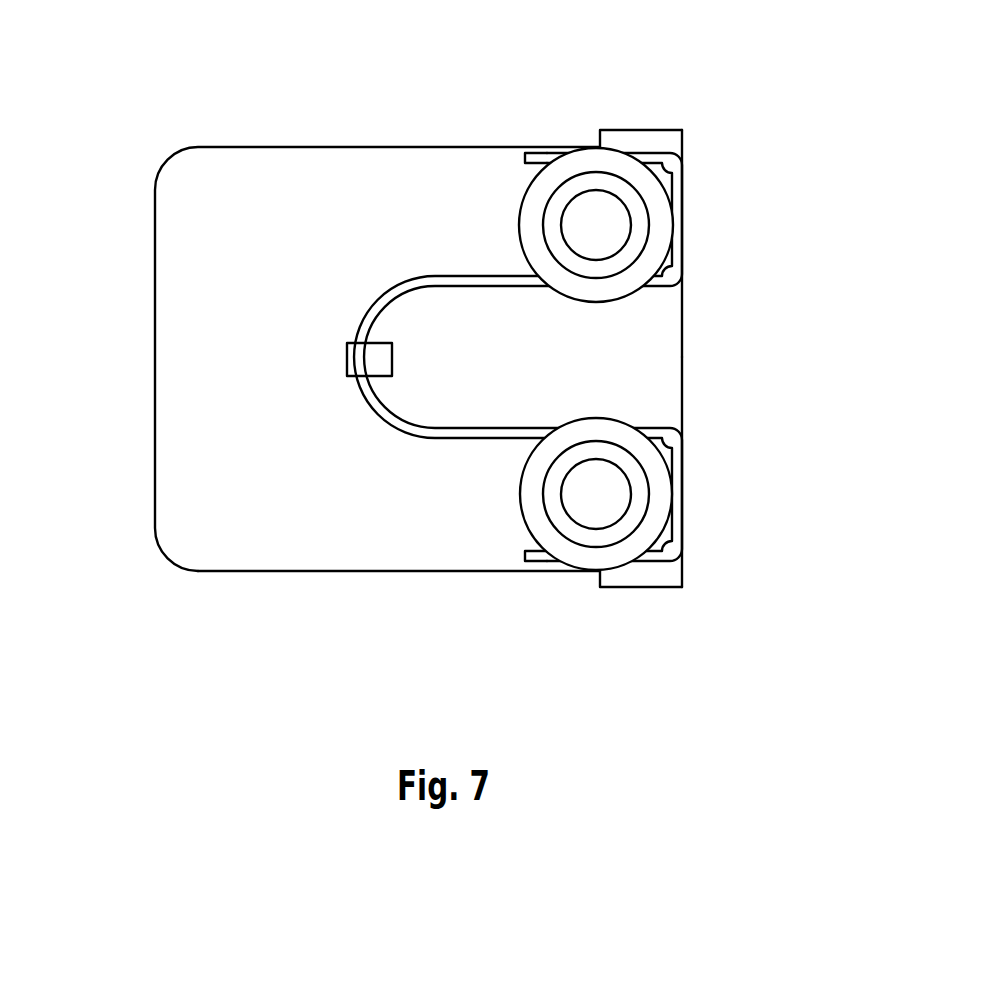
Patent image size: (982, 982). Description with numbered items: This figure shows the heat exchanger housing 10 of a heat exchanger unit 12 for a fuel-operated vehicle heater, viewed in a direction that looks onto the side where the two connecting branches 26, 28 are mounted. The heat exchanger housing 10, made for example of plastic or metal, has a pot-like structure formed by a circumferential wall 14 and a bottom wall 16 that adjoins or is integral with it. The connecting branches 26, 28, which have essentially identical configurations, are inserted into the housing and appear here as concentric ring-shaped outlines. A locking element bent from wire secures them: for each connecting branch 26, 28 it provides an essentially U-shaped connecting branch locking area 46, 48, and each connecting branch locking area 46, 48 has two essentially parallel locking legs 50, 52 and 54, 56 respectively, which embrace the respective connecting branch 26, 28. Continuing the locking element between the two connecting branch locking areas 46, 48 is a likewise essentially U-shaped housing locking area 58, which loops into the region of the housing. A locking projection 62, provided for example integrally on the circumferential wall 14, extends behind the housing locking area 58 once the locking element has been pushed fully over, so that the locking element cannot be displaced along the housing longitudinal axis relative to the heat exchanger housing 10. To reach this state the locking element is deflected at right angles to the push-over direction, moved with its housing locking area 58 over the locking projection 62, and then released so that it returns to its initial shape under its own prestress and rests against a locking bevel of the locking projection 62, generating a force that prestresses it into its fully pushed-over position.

The heat exchanger housing 10 is at (318, 355).
The heat exchanger unit 12 is at (718, 296).
The circumferential wall 14 is at (348, 572).
The bottom wall 16 is at (155, 345).
The connecting branch 26 is at (596, 547).
The connecting branch 28 is at (590, 171).
The connecting branch locking area 46 is at (682, 508).
The connecting branch locking area 48 is at (682, 252).
The locking leg 50 is at (530, 563).
The locking leg 52 is at (650, 427).
The locking leg 54 is at (652, 292).
The locking leg 56 is at (530, 153).
The housing locking area 58 is at (358, 390).
The locking projection 62 is at (394, 356).